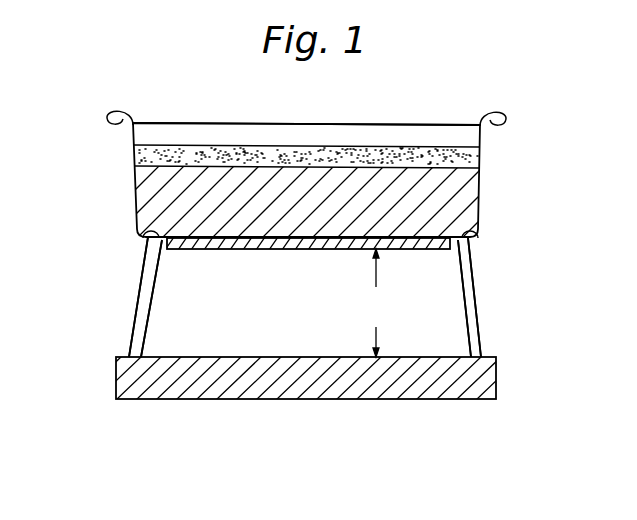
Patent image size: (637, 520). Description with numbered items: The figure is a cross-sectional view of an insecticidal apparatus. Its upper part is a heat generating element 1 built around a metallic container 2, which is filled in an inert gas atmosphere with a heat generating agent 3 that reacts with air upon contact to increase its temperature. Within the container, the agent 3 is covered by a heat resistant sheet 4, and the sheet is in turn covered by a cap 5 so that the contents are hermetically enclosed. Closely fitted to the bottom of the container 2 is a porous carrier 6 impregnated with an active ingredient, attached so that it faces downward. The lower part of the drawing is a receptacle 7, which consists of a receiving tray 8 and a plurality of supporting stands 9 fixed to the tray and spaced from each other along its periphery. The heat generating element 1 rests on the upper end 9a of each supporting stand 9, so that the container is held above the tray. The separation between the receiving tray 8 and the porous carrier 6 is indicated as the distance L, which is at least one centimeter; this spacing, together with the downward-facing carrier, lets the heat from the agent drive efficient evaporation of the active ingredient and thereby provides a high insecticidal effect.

The heat generating element 1 is at (126, 141).
The metallic container 2 is at (134, 153).
The heat generating agent 3 is at (146, 188).
The heat resistant sheet 4 is at (284, 150).
The cap 5 is at (186, 124).
The porous carrier 6 is at (246, 249).
The receptacle 7 is at (115, 358).
The receiving tray 8 is at (264, 387).
The supporting stands 9 is at (139, 312).
The upper end 9a is at (138, 230).
The distance L is at (375, 303).